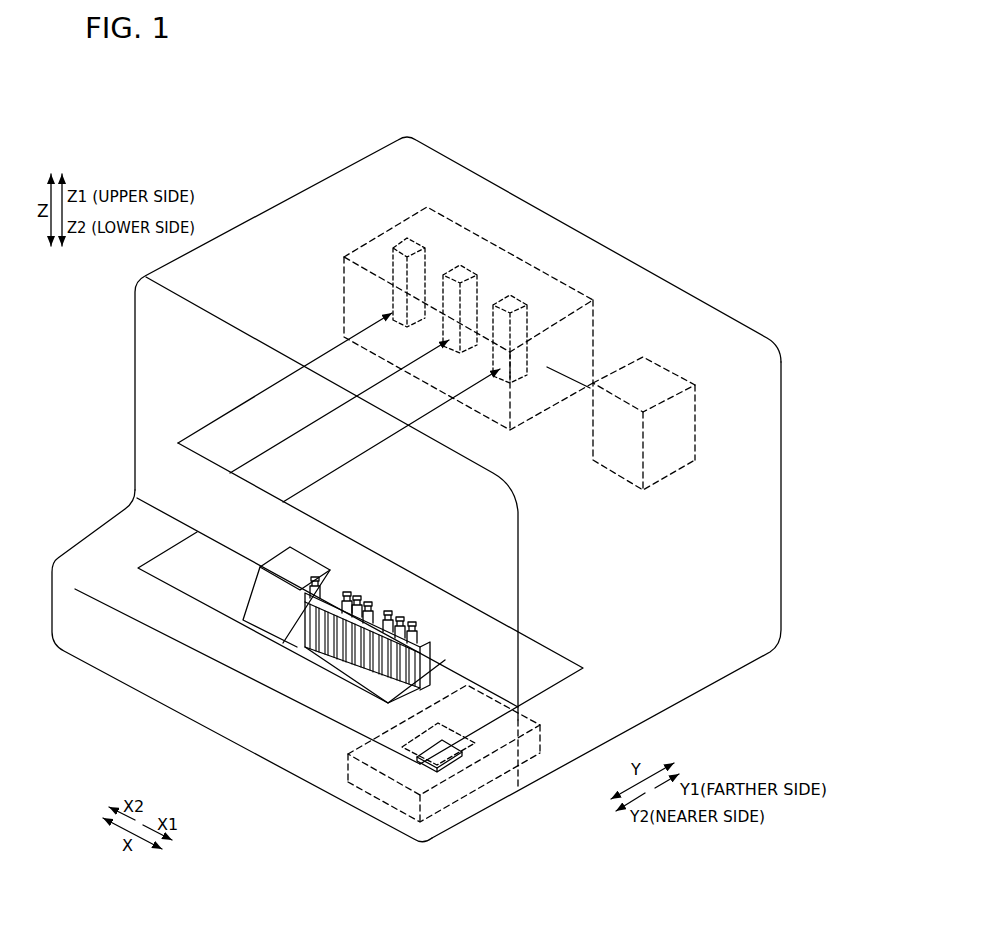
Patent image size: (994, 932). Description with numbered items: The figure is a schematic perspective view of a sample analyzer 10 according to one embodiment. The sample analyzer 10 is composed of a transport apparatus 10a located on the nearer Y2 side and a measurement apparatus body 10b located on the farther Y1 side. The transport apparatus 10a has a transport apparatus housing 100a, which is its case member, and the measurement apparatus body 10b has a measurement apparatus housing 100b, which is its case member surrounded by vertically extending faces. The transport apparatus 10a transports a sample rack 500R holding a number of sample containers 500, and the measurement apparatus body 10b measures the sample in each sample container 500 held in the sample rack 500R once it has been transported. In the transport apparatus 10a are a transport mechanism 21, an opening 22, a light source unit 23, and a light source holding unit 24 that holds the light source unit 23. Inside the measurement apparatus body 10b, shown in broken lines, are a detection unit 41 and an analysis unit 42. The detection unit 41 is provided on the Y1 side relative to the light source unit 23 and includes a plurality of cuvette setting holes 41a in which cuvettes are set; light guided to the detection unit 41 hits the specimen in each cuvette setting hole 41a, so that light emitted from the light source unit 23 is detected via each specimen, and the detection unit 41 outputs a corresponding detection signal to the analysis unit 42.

The sample analyzer 10 is at (416, 476).
The transport apparatus 10a is at (310, 788).
The measurement apparatus body 10b is at (515, 192).
The transport apparatus housing 100a is at (138, 667).
The measurement apparatus housing 100b is at (653, 290).
The transport mechanism 21 is at (237, 600).
The opening 22 is at (427, 737).
The light source unit 23 is at (440, 753).
The light source holding unit 24 is at (437, 800).
The detection unit 41 is at (568, 303).
The cuvette setting holes 41a is at (429, 294).
The analysis unit 42 is at (642, 378).
The sample containers 500 is at (418, 642).
The sample rack 500R is at (335, 662).